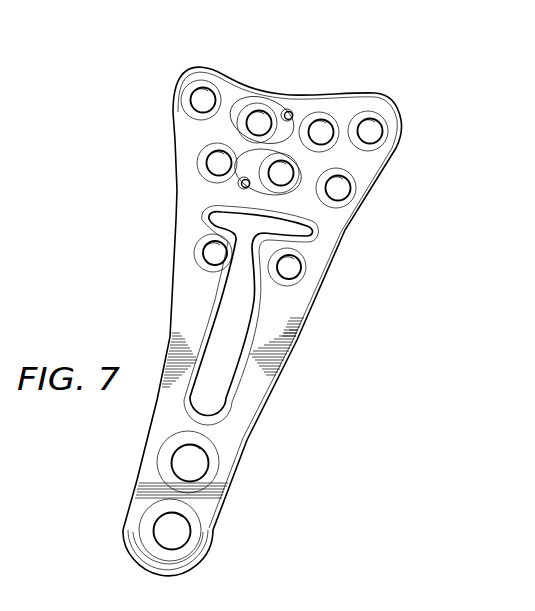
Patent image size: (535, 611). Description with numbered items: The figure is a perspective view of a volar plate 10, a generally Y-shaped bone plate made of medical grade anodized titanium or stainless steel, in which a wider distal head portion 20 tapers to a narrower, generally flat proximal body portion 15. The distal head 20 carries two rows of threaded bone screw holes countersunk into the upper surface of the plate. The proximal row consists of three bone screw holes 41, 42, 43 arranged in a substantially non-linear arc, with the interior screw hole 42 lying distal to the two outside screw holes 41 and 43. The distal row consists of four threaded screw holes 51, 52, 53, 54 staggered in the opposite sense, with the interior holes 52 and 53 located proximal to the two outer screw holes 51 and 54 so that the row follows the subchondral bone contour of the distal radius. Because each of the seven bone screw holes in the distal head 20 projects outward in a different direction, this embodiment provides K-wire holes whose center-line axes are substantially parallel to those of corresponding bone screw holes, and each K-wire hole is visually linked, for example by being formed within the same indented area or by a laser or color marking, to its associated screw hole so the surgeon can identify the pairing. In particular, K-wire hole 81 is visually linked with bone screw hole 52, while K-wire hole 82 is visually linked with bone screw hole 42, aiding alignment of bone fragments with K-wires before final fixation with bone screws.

The volar plate 10 is at (85, 265).
The proximal body portion 15 is at (111, 522).
The distal head portion 20 is at (413, 116).
The bone screw hole 41 is at (217, 163).
The bone screw hole 42 is at (283, 170).
The bone screw hole 43 is at (340, 186).
The bone screw hole 51 is at (200, 100).
The bone screw hole 52 is at (256, 124).
The bone screw hole 53 is at (318, 131).
The bone screw hole 54 is at (368, 131).
The K-wire hole 81 is at (286, 112).
The K-wire hole 82 is at (242, 184).